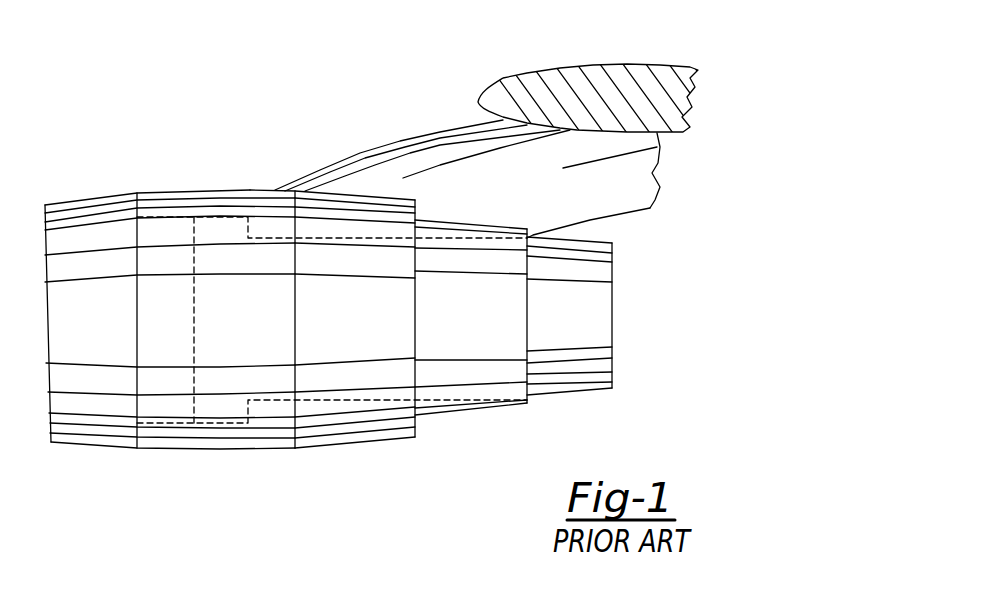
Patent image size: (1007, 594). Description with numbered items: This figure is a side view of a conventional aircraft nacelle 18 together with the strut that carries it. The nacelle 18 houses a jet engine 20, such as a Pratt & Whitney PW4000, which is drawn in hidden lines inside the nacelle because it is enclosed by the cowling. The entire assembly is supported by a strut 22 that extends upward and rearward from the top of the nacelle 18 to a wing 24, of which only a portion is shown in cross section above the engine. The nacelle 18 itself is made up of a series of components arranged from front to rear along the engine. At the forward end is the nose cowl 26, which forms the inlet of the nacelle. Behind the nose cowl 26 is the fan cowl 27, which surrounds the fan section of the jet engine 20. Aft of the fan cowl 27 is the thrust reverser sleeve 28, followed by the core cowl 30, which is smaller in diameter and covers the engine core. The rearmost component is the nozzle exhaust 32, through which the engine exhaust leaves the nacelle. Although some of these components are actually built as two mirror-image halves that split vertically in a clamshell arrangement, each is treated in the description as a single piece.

The aircraft nacelle 18 is at (135, 186).
The jet engine 20 is at (194, 190).
The strut 22 is at (368, 162).
The wing 24 is at (628, 70).
The nose cowl 26 is at (73, 225).
The fan cowl 27 is at (247, 189).
The thrust reverser sleeve 28 is at (310, 228).
The core cowl 30 is at (443, 218).
The nozzle exhaust 32 is at (598, 307).